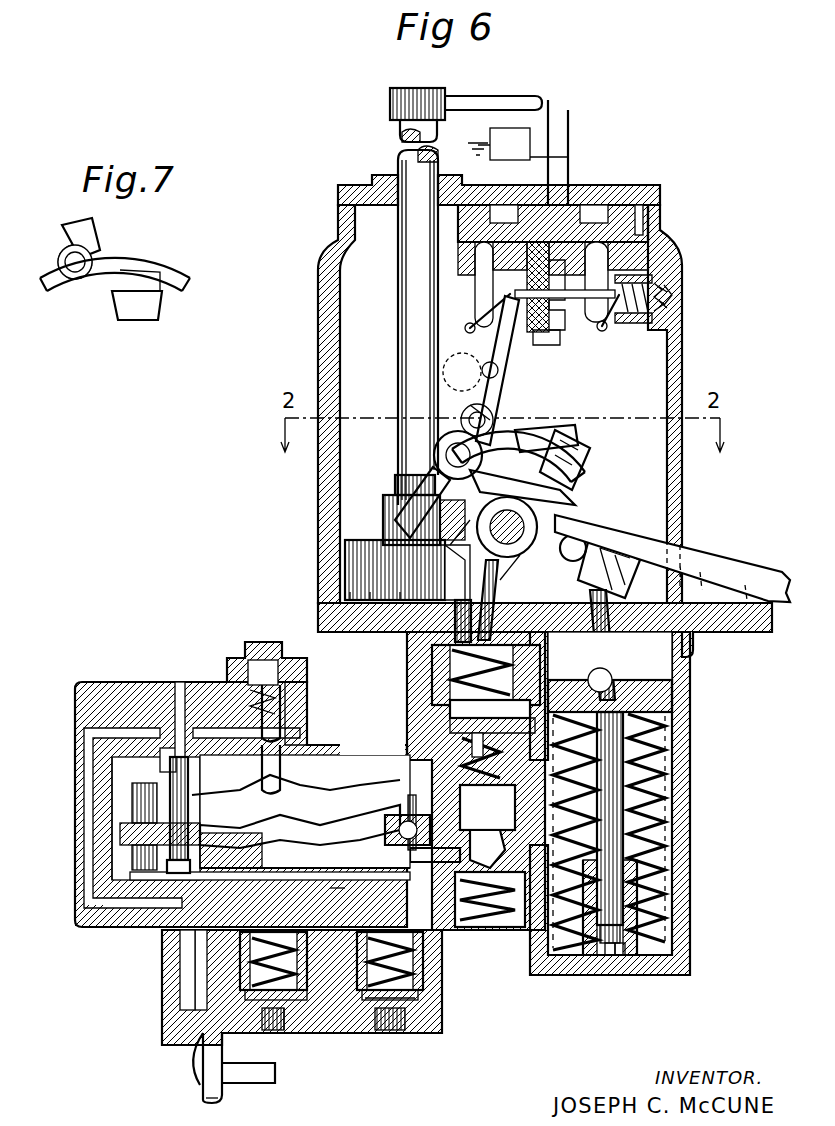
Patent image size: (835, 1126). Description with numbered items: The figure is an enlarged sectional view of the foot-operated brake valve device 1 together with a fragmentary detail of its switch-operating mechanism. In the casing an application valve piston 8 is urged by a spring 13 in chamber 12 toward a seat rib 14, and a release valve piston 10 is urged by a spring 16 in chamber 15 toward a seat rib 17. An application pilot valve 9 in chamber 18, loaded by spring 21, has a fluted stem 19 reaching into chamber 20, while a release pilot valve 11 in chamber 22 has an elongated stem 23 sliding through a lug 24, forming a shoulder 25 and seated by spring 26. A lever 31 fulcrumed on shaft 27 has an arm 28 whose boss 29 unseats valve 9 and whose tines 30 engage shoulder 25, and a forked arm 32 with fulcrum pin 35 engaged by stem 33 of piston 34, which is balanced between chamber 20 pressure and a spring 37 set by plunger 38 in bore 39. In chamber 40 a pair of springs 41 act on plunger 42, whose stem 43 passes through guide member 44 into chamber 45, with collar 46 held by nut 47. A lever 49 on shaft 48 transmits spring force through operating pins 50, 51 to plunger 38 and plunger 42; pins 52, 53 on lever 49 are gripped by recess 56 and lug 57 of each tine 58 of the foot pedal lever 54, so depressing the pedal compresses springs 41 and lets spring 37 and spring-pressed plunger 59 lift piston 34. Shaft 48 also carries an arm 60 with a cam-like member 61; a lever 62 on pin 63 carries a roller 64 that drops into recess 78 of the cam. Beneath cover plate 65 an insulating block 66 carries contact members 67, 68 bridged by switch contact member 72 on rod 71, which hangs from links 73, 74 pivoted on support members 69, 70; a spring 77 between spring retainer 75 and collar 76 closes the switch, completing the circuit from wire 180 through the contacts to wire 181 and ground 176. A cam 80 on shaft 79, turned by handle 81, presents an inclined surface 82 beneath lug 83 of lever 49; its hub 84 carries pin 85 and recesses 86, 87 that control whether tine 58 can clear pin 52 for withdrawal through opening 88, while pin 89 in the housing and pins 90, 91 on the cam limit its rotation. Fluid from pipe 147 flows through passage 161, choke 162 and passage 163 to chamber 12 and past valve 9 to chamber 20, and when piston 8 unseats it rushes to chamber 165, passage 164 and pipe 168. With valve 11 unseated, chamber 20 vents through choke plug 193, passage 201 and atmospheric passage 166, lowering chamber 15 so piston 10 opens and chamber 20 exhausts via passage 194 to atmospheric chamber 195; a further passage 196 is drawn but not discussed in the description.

In FIG. 6, the foot-operated brake valve device 1 is at (335, 240).
In FIG. 6, the application valve piston 8 is at (262, 982).
In FIG. 6, the application pilot valve 9 is at (272, 738).
In FIG. 6, the release valve piston 10 is at (442, 985).
In FIG. 6, the release pilot valve 11 is at (160, 782).
In FIG. 6, the chamber 12 is at (272, 952).
In FIG. 6, the spring 13 is at (242, 1002).
In FIG. 6, the seat rib 14 is at (262, 1022).
In FIG. 6, the chamber 15 is at (412, 952).
In FIG. 6, the spring 16 is at (398, 960).
In FIG. 6, the seat rib 17 is at (402, 1010).
In FIG. 6, the chamber 18 is at (300, 705).
In FIG. 6, the fluted stem 19 is at (272, 772).
In FIG. 6, the chamber 20 is at (390, 753).
In FIG. 6, the spring 21 is at (262, 672).
In FIG. 6, the chamber 22 is at (163, 760).
In FIG. 6, the elongated stem 23 is at (165, 792).
In FIG. 6, the lug 24 is at (150, 832).
In FIG. 6, the shoulder 25 is at (190, 832).
In FIG. 6, the spring 26 is at (165, 852).
In FIG. 6, the shaft 27 is at (398, 832).
In FIG. 6, the arm 28 is at (332, 828).
In FIG. 6, the boss 29 is at (252, 792).
In FIG. 6, the tines 30 is at (160, 812).
In FIG. 6, the lever 31 is at (412, 810).
In FIG. 6, the forked arm 32 is at (446, 853).
In FIG. 6, the stem 33 is at (486, 792).
In FIG. 6, the piston 34 is at (412, 702).
In FIG. 6, the fulcrum pin 35 is at (505, 855).
In FIG. 6, the spring 37 is at (527, 663).
In FIG. 6, the plunger 38 is at (512, 640).
In FIG. 6, the bore 39 is at (562, 682).
In FIG. 6, the chamber 40 is at (670, 724).
In FIG. 6, the springs 41 is at (657, 752).
In FIG. 6, the plunger 42 is at (682, 690).
In FIG. 6, the stem 43 is at (614, 796).
In FIG. 6, the guide member 44 is at (652, 866).
In FIG. 6, the chamber 45 is at (627, 892).
In FIG. 6, the collar 46 is at (635, 952).
In FIG. 6, the nut 47 is at (618, 960).
In FIG. 6, the shaft 48 is at (540, 496).
In FIG. 6, the lever 49 is at (578, 545).
In FIG. 6, the operating pin 50 is at (525, 597).
In FIG. 6, the operating pin 51 is at (612, 642).
In FIG. 6, the pin 52 is at (440, 452).
In FIG. 6, the pin 53 is at (642, 540).
In FIG. 6, the foot operated pedal lever 54 is at (748, 562).
In FIG. 6, the recess 56 is at (443, 462).
In FIG. 6, the lug 57 is at (592, 530).
In FIG. 6, the tine 58 is at (580, 440).
In FIG. 6, the spring-pressed plunger 59 is at (470, 892).
In FIG. 6, the arm 60 is at (560, 458).
In FIG. 7, the arm 60 is at (155, 298).
In FIG. 6, the cam-like member 61 is at (575, 398).
In FIG. 7, the cam-like member 61 is at (150, 266).
In FIG. 6, the lever 62 is at (492, 340).
In FIG. 6, the pin 63 is at (502, 383).
In FIG. 6, the roller 64 is at (490, 418).
In FIG. 7, the roller 64 is at (95, 252).
In FIG. 6, the cover plate 65 is at (652, 194).
In FIG. 6, the block of insulating material 66 is at (637, 222).
In FIG. 6, the contact member 67 is at (538, 257).
In FIG. 6, the contact member 68 is at (553, 330).
In FIG. 6, the support member 69 is at (482, 272).
In FIG. 6, the support member 70 is at (600, 262).
In FIG. 6, the rod 71 is at (540, 326).
In FIG. 6, the switch contact member 72 is at (592, 292).
In FIG. 6, the link 73 is at (480, 312).
In FIG. 6, the link 74 is at (608, 320).
In FIG. 6, the spring retainer 75 is at (663, 297).
In FIG. 6, the collar 76 is at (643, 278).
In FIG. 6, the spring 77 is at (642, 318).
In FIG. 6, the recess 78 is at (470, 372).
In FIG. 7, the recess 78 is at (60, 268).
In FIG. 6, the shaft 79 is at (405, 316).
In FIG. 6, the cam 80 is at (425, 580).
In FIG. 6, the handle 81 is at (462, 93).
In FIG. 6, the inclined surface 82 is at (402, 566).
In FIG. 6, the lug 83 is at (390, 522).
In FIG. 6, the hub portion 84 is at (372, 540).
In FIG. 6, the pin 85 is at (396, 505).
In FIG. 6, the recess 86 is at (380, 600).
In FIG. 6, the recess 87 is at (402, 551).
In FIG. 6, the opening 88 is at (675, 455).
In FIG. 6, the pin 89 is at (362, 610).
In FIG. 6, the pin 90 is at (382, 618).
In FIG. 6, the pin 91 is at (458, 612).
In FIG. 6, the pipe 147 is at (200, 1072).
In FIG. 6, the passage 161 is at (182, 1022).
In FIG. 6, the choke 162 is at (172, 947).
In FIG. 6, the passage 163 is at (92, 927).
In FIG. 6, the passage 164 is at (205, 1035).
In FIG. 6, the chamber 165 is at (285, 1012).
In FIG. 6, the atmospheric passage 166 is at (181, 700).
In FIG. 6, the pipe 168 is at (212, 1095).
In FIG. 6, the ground 176 is at (540, 157).
In FIG. 6, the wire 180 is at (570, 130).
In FIG. 6, the wire 181 is at (520, 128).
In FIG. 6, the choke plug 193 is at (375, 880).
In FIG. 6, the passage 194 is at (352, 1030).
In FIG. 6, the atmospheric chamber 195 is at (395, 1036).
In FIG. 6, the passage 196 is at (92, 745).
In FIG. 6, the passage 201 is at (341, 890).